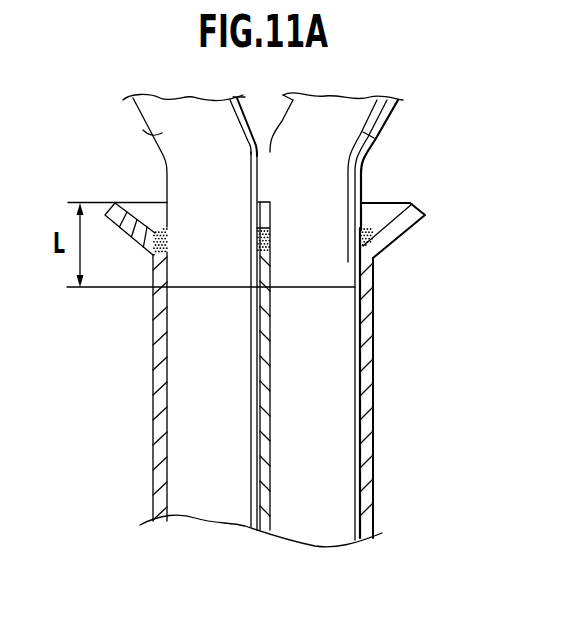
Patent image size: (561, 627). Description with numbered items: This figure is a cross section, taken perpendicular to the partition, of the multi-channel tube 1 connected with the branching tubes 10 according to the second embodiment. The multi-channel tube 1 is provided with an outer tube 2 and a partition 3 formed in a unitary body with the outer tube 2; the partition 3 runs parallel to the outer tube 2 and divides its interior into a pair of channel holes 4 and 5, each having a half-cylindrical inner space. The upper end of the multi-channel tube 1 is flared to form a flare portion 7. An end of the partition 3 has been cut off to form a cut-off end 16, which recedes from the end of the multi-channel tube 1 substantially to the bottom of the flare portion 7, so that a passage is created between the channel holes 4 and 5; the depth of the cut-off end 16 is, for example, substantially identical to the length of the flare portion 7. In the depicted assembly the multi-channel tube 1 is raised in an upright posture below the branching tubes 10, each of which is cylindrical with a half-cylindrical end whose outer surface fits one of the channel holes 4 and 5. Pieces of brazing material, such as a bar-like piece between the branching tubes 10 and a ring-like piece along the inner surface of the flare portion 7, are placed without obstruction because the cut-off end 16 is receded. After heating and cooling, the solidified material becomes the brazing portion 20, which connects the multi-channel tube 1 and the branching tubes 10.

The multi-channel tube 1 is at (390, 377).
The outer tube 2 is at (366, 469).
The partition 3 is at (251, 500).
The channel hole 4 is at (167, 493).
The channel hole 5 is at (356, 505).
The flare portion 7 is at (400, 231).
The branching tube 10 is at (163, 133).
The cut-off end 16 is at (272, 240).
The brazing portion 20 is at (257, 237).